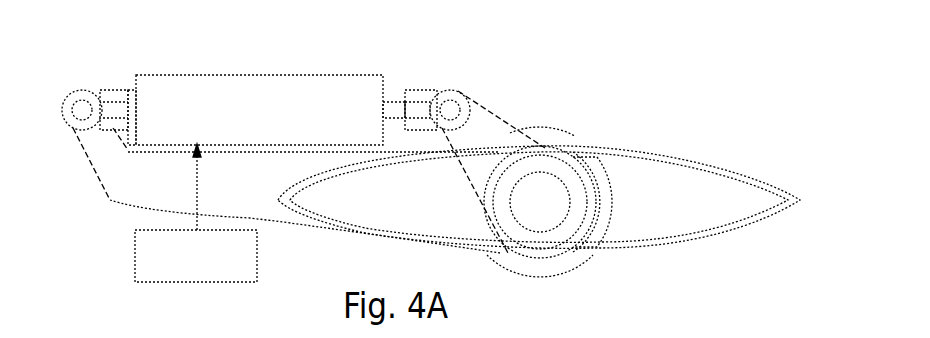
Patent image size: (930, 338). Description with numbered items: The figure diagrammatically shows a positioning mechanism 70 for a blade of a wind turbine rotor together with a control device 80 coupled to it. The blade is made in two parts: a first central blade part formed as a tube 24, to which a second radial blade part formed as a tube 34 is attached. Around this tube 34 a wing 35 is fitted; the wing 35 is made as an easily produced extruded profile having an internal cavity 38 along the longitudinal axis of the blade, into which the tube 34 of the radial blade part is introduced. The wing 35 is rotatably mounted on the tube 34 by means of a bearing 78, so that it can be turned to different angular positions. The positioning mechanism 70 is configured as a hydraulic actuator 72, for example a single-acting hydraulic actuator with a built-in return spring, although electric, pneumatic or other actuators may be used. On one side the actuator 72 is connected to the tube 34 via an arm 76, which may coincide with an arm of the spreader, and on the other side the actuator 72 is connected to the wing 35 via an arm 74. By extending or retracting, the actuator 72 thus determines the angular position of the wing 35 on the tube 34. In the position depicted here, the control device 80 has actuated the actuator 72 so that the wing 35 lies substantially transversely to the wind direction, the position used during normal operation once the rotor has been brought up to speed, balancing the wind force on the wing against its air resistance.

The positioning mechanism 70 is at (150, 36).
The hydraulic actuator 72 is at (228, 82).
The arm 74 is at (482, 117).
The arm 76 is at (112, 185).
The bearing 78 is at (578, 213).
The control device 80 is at (143, 264).
The wing 35 is at (658, 248).
The tube 34 is at (545, 188).
The internal cavity 38 is at (533, 149).
The tube 24 is at (553, 265).